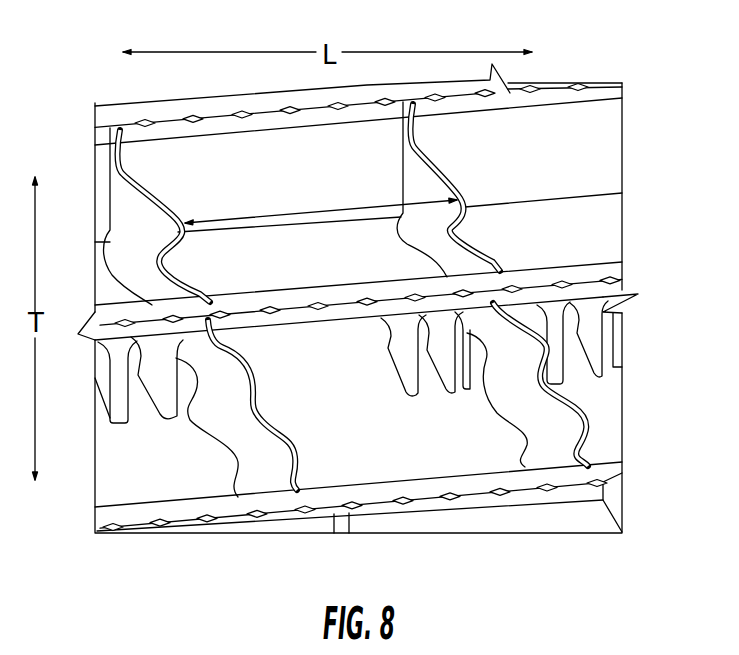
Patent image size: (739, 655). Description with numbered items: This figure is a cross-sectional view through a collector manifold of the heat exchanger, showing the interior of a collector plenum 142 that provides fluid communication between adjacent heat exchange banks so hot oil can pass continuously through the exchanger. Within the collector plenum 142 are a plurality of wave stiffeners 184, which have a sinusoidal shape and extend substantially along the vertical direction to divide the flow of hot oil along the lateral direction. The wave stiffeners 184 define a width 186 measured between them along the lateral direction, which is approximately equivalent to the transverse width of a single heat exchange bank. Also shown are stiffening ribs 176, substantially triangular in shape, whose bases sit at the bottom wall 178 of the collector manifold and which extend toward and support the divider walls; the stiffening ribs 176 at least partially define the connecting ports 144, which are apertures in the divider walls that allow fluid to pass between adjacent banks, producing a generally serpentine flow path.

The collector plenum 142 is at (560, 235).
The connecting port 144 is at (430, 378).
The stiffening rib 176 is at (608, 361).
The bottom wall 178 is at (450, 450).
The wave stiffener 184 is at (455, 178).
The width 186 is at (208, 220).